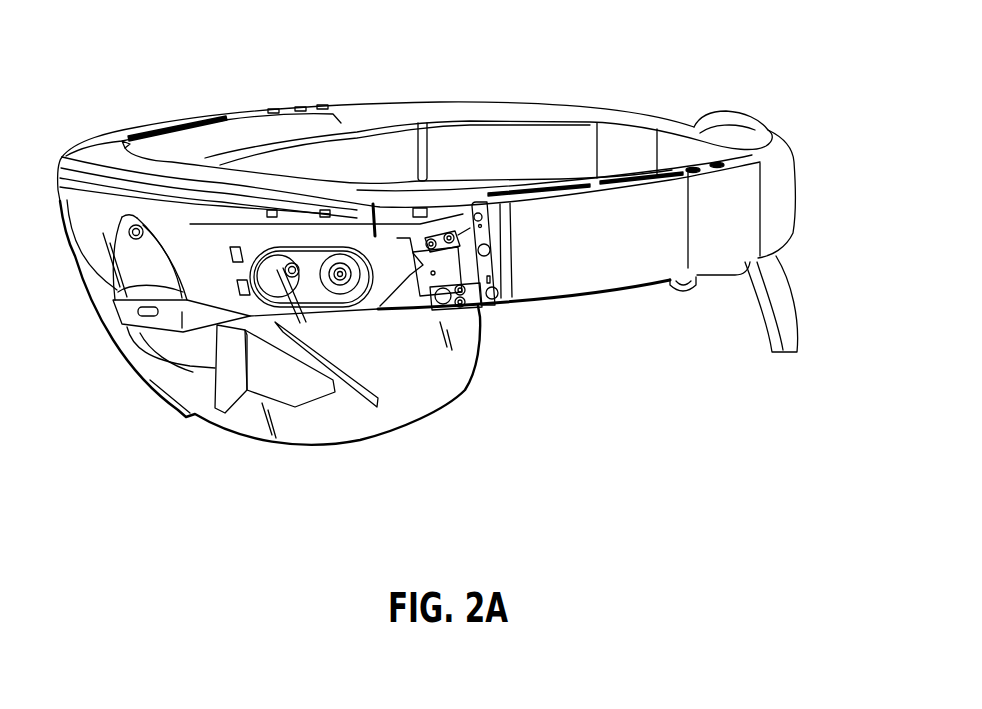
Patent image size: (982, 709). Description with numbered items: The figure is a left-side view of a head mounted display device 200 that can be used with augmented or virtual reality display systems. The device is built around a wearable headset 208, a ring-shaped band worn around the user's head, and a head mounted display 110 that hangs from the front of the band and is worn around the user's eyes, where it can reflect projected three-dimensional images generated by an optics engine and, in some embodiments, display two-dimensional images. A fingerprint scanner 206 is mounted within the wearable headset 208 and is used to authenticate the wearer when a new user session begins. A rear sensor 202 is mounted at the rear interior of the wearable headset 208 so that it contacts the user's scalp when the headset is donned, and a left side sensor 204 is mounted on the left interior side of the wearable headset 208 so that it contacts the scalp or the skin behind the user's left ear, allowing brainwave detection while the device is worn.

The head mounted display device 200 is at (425, 265).
The rear sensor 202 is at (583, 134).
The left side sensor 204 is at (645, 393).
The fingerprint scanner 206 is at (698, 273).
The wearable headset 208 is at (741, 135).
The head mounted display 110 is at (309, 447).